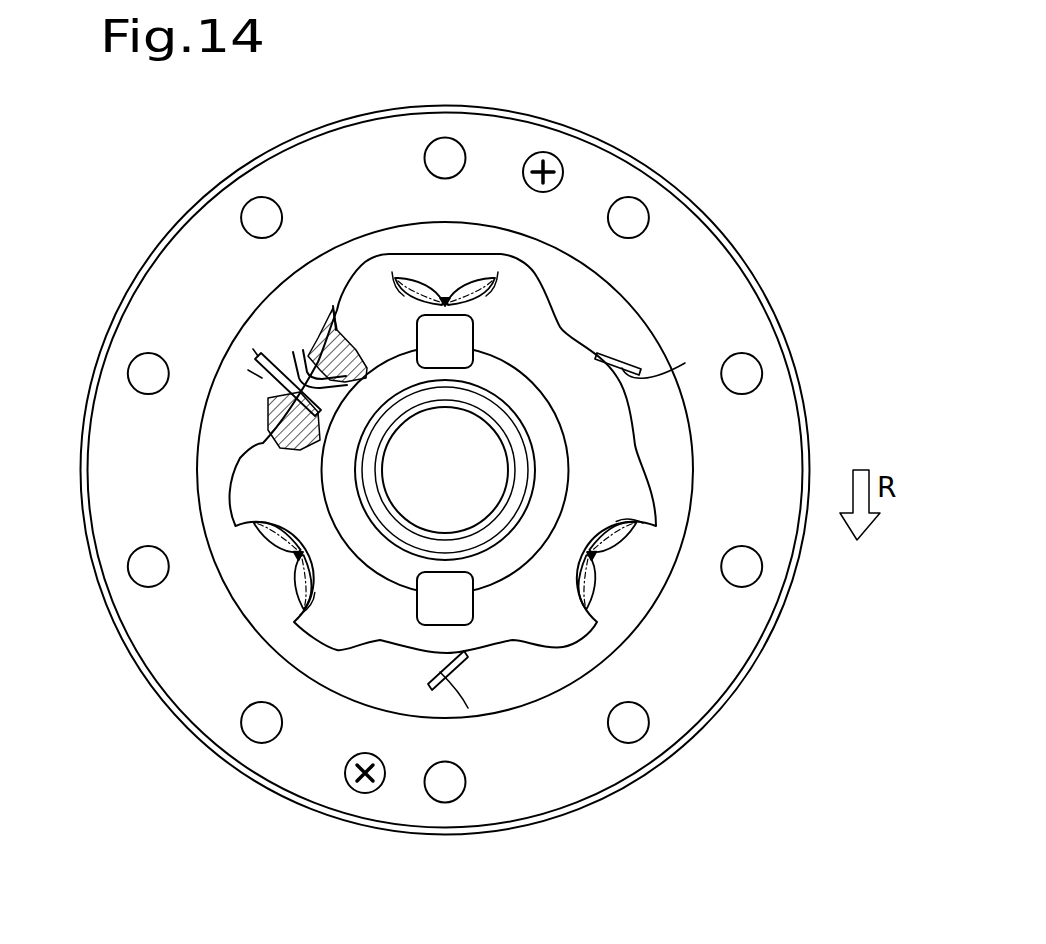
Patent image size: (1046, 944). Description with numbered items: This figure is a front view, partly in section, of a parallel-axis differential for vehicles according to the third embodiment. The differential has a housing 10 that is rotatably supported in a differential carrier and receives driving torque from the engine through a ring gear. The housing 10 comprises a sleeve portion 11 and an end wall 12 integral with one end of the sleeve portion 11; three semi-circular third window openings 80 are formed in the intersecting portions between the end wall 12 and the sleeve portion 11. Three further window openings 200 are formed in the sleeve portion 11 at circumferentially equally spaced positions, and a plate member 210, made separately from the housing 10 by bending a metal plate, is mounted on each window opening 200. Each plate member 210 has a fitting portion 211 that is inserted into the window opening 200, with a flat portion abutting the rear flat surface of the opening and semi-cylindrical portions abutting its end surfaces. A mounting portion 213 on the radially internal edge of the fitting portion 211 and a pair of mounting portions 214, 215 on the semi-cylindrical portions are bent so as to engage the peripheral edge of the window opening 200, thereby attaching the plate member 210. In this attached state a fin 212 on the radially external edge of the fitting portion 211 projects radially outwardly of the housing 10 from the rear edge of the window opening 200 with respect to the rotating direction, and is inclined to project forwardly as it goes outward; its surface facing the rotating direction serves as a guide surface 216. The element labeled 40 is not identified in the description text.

The housing 10 is at (700, 195).
The sleeve portion 11 is at (448, 252).
The end wall 12 is at (622, 465).
The leaf spring 40 is at (423, 268).
The third window openings 80 is at (490, 272).
The window openings 200 is at (300, 352).
The plate member 210 is at (254, 371).
The fitting portion 211 is at (305, 393).
The fin 212 is at (252, 378).
The mounting portion 213 is at (315, 422).
The mounting portion 214 is at (265, 352).
The mounting portion 215 is at (337, 287).
The guide surface 216 is at (258, 356).